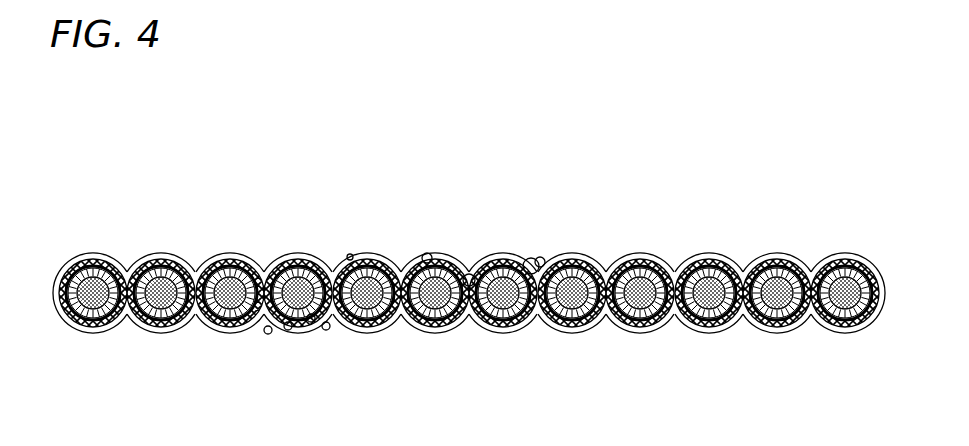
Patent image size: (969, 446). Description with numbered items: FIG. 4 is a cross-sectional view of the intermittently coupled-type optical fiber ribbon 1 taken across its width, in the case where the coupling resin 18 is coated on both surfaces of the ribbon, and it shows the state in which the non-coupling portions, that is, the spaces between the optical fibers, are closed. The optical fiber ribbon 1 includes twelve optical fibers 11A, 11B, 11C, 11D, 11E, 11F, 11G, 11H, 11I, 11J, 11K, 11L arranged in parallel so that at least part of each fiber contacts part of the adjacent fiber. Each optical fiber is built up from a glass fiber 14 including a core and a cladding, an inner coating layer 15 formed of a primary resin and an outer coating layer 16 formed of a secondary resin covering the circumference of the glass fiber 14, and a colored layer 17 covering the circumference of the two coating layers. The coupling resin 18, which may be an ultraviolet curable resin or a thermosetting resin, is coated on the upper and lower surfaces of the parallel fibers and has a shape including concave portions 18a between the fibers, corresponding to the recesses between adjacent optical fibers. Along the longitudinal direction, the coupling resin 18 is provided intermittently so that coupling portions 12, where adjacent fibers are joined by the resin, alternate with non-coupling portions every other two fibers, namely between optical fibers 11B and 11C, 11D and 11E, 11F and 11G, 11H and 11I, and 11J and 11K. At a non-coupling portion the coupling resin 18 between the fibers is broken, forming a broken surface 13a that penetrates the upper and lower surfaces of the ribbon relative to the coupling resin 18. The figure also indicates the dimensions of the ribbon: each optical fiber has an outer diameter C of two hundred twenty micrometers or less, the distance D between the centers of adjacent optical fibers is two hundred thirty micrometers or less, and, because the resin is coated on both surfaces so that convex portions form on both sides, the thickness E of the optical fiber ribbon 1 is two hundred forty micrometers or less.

The optical fiber ribbon 1 is at (569, 132).
The optical fiber 11A is at (95, 334).
The optical fiber 11B is at (163, 334).
The optical fiber 11C is at (232, 334).
The optical fiber 11D is at (300, 334).
The optical fiber 11E is at (367, 334).
The optical fiber 11F is at (434, 334).
The optical fiber 11G is at (499, 334).
The optical fiber 11H is at (570, 334).
The optical fiber 11I is at (640, 334).
The optical fiber 11J is at (703, 334).
The optical fiber 11K is at (776, 334).
The optical fiber 11L is at (843, 334).
The coupling portion 12 is at (531, 258).
The broken surface 13a is at (466, 258).
The glass fiber 14 is at (326, 327).
The inner coating layer 15 is at (311, 320).
The outer coating layer 16 is at (288, 328).
The colored layer 17 is at (268, 331).
The coupling resin 18 is at (427, 252).
The concave portion 18a is at (540, 256).
The outer diameter C is at (351, 255).
The distance between centers D is at (161, 252).
The thickness E is at (848, 253).